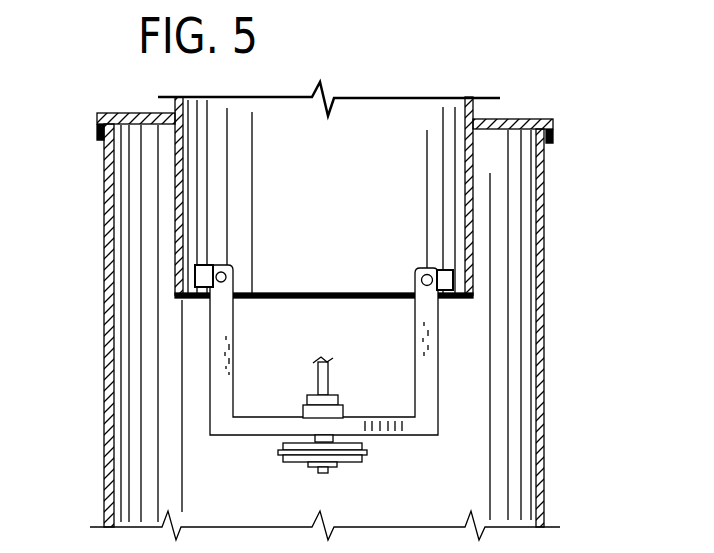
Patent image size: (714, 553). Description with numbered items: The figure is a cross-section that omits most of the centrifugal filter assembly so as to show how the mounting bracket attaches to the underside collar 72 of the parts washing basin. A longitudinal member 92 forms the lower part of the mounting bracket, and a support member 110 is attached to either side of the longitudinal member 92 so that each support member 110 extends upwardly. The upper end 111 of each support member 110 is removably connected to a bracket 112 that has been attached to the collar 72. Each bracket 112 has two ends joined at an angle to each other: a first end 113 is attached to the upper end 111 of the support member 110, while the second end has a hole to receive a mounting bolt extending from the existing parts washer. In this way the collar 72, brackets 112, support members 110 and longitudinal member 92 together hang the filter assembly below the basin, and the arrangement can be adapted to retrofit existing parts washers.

The collar 72 is at (477, 195).
The longitudinal member 92 is at (407, 435).
The support member 110 is at (210, 380).
The upper end 111 is at (210, 327).
The bracket 112 is at (207, 262).
The first end 113 is at (207, 273).